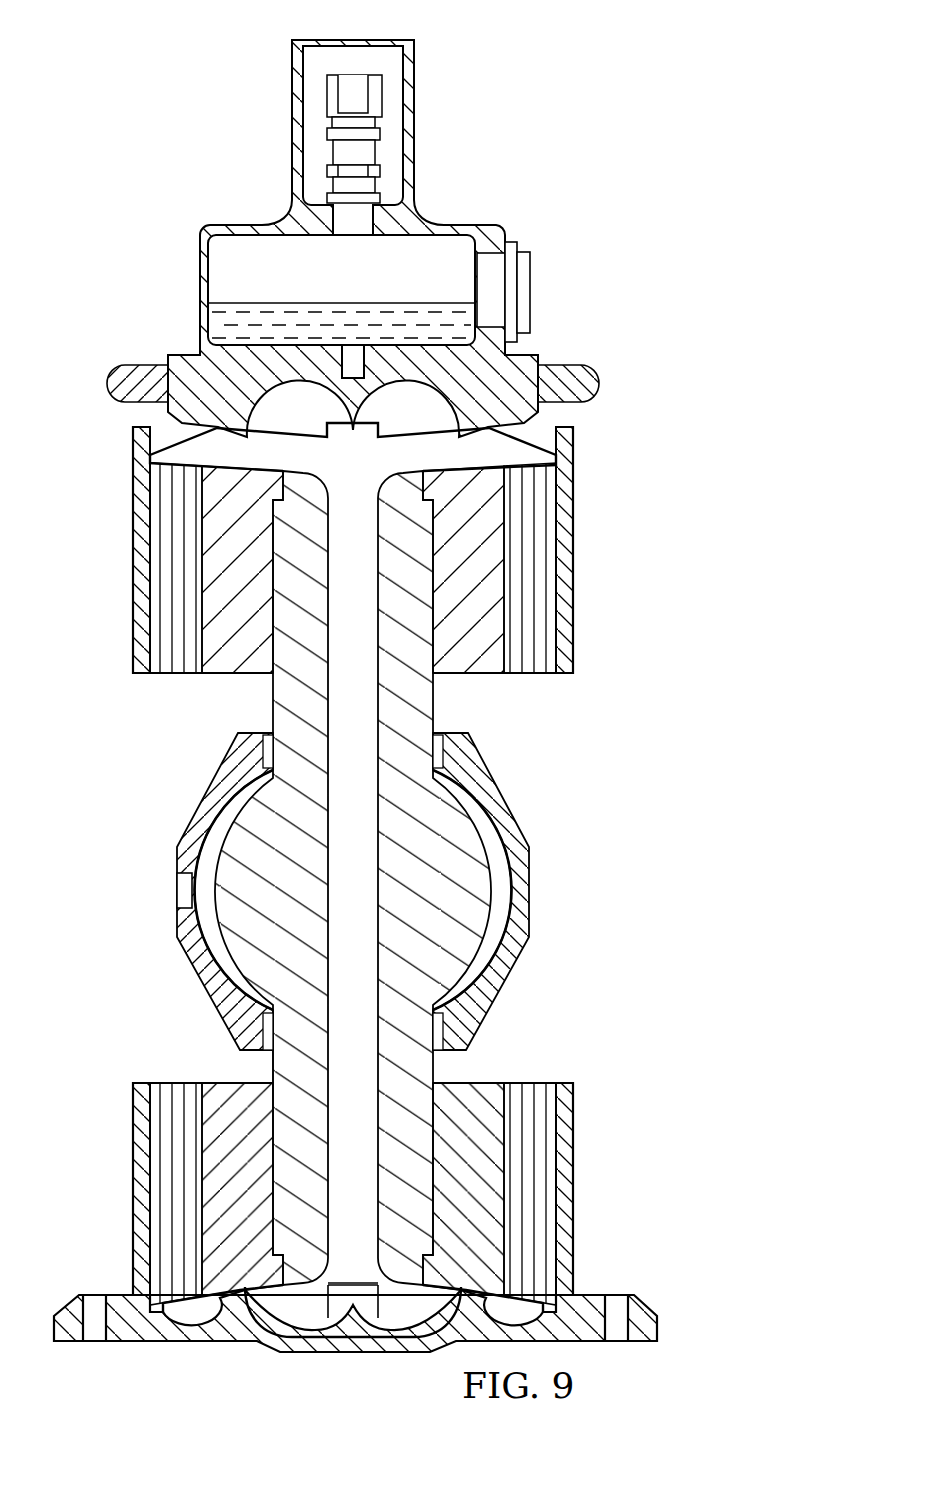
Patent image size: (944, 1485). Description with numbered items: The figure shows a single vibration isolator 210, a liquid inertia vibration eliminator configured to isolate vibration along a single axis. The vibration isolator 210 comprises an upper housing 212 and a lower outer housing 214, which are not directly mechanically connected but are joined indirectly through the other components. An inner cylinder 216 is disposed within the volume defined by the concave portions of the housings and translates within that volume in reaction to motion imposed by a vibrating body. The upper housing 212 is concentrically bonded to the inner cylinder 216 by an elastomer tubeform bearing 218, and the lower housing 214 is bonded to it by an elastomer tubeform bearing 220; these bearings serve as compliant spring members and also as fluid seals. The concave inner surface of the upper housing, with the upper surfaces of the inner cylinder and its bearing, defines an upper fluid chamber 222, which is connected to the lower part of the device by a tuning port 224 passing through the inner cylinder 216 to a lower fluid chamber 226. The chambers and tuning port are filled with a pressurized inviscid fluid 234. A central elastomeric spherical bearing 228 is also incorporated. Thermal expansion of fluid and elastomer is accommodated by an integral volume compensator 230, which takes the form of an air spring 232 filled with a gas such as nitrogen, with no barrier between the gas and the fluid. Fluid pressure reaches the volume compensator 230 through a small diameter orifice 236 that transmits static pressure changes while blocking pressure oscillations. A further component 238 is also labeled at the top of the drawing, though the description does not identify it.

The vibration isolator 210 is at (136, 87).
The upper housing 212 is at (127, 468).
The lower outer housing 214 is at (127, 1171).
The inner cylinder 216 is at (422, 707).
The elastomer tubeform bearing 218 is at (218, 675).
The elastomer tubeform bearing 220 is at (536, 1083).
The upper fluid chamber 222 is at (333, 472).
The tuning port 224 is at (323, 1100).
The lower fluid chamber 226 is at (303, 1302).
The central elastomeric spherical bearing 228 is at (520, 890).
The volume compensator 230 is at (242, 222).
The air spring 232 is at (458, 280).
The inviscid fluid 234 is at (327, 312).
The orifice 236 is at (353, 360).
The connector 238 is at (383, 98).